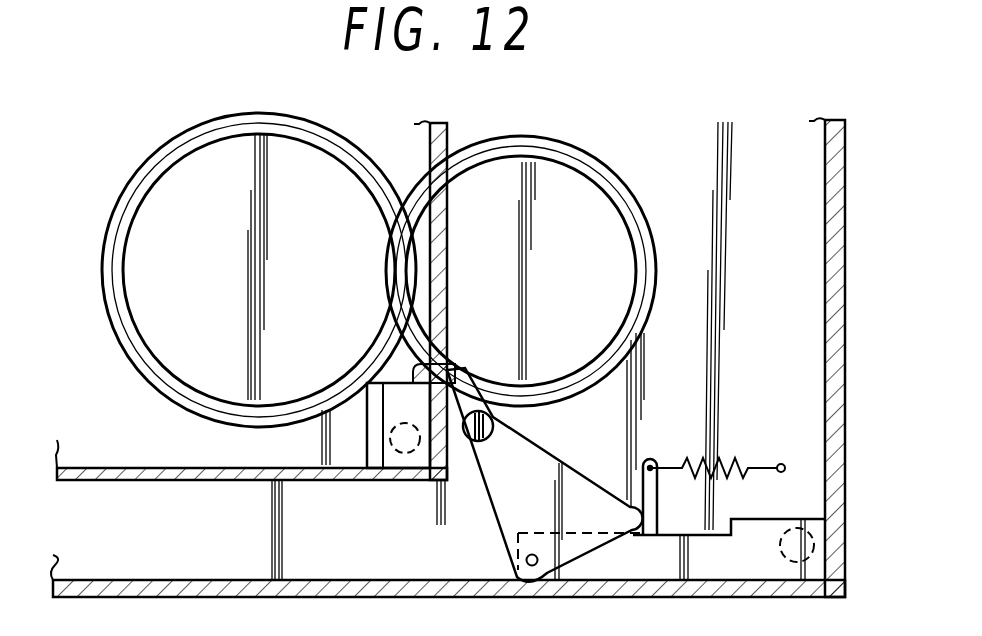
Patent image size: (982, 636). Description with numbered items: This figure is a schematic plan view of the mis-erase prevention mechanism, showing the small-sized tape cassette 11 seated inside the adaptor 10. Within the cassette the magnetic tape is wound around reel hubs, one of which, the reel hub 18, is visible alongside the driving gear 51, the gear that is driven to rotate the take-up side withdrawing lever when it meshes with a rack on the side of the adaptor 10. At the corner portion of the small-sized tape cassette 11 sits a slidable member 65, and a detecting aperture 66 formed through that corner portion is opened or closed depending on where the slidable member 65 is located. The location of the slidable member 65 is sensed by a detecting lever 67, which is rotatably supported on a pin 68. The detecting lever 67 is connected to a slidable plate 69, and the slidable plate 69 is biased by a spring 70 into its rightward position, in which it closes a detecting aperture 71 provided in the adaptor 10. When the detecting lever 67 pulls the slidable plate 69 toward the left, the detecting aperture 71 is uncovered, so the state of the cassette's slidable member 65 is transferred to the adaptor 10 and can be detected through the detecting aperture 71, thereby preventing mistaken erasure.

The adaptor 10 is at (846, 150).
The small-sized tape cassette 11 is at (103, 483).
The reel hub 18 is at (138, 168).
The driving gear 51 is at (603, 157).
The slidable member 65 is at (390, 402).
The detecting aperture 66 is at (403, 482).
The detecting lever 67 is at (497, 493).
The pin 68 is at (497, 434).
The slidable plate 69 is at (743, 537).
The spring 70 is at (727, 458).
The detecting aperture 71 is at (810, 553).